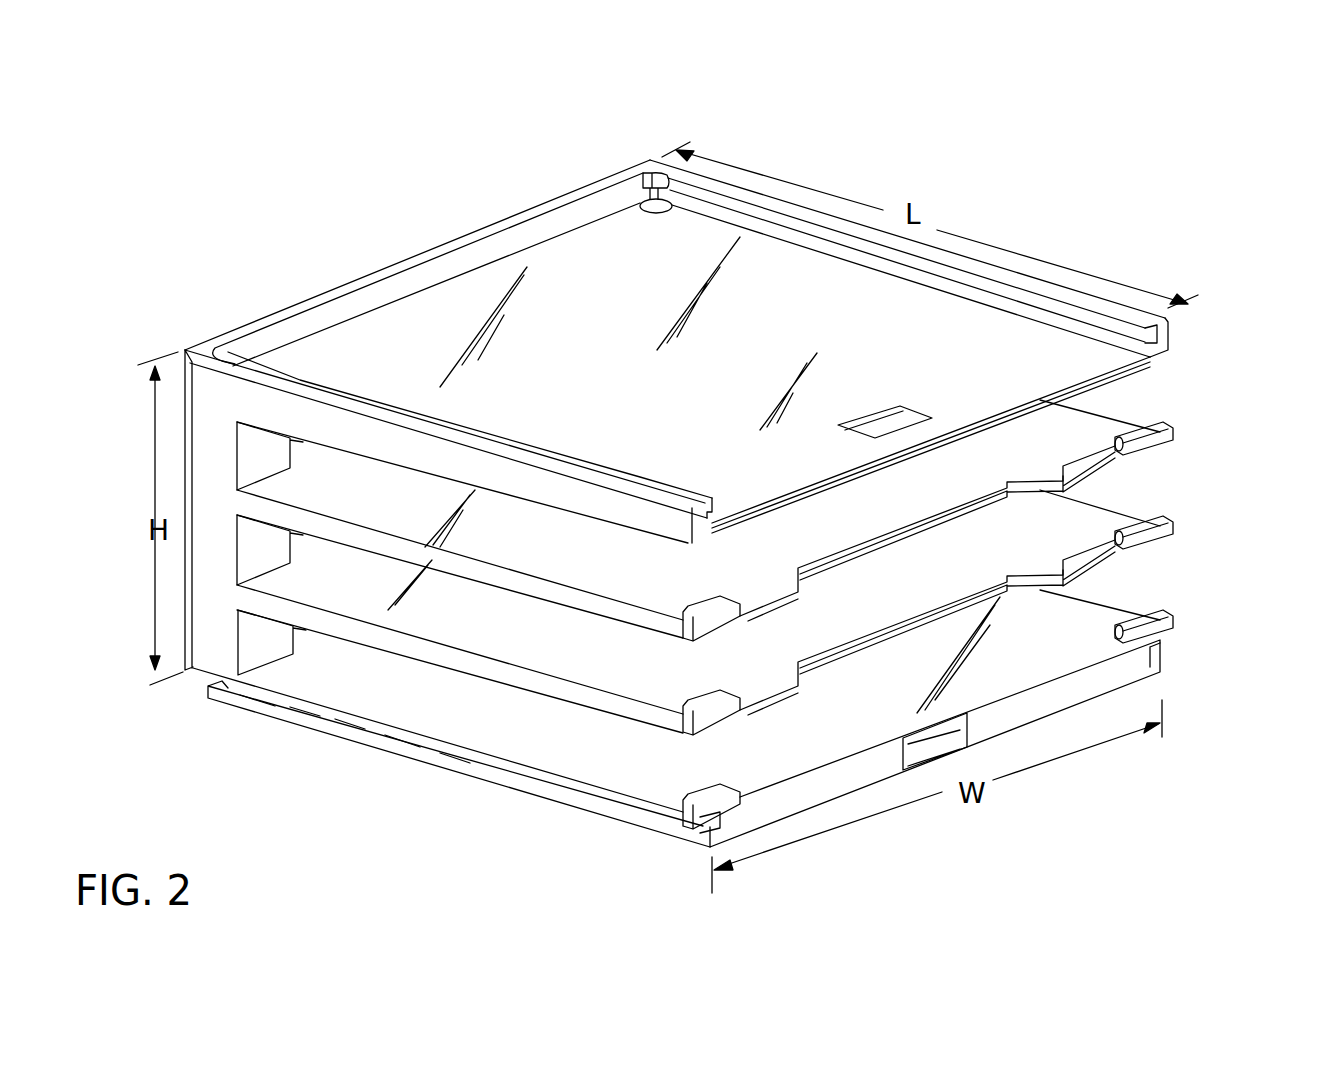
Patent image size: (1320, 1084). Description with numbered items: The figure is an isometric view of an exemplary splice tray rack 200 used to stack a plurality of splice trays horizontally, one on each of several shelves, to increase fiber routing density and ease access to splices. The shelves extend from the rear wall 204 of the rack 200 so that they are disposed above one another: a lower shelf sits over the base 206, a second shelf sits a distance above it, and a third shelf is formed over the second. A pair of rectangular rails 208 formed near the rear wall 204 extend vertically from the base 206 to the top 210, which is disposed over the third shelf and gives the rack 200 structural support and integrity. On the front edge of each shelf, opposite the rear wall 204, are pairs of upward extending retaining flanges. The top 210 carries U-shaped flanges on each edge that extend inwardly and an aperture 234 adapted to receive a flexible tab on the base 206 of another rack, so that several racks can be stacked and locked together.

The splice tray rack 200 is at (1284, 811).
The rear wall 204 is at (286, 242).
The base 206 is at (530, 795).
The rails 208 is at (209, 633).
The top 210 is at (575, 500).
The aperture 234 is at (905, 418).